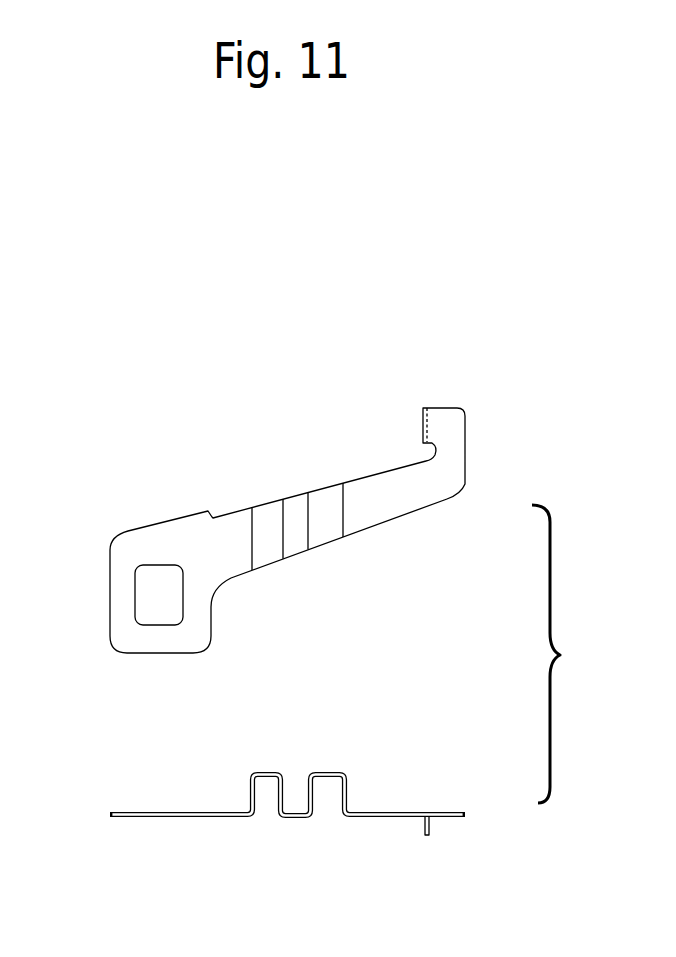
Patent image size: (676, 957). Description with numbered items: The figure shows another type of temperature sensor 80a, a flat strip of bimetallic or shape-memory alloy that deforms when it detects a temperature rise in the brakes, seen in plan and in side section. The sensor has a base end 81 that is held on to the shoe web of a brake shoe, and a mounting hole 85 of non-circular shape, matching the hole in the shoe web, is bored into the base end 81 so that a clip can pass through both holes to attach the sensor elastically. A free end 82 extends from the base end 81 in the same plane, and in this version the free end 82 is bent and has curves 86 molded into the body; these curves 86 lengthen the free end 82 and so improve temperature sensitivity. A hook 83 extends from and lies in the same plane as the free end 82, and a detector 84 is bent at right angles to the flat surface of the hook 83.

The spring member 80a is at (187, 510).
The base end 81 is at (192, 632).
The free end 82 is at (397, 512).
The hook 83 is at (438, 418).
The detector 84 is at (423, 429).
The mounting hole 85 is at (147, 592).
The curves 86 is at (268, 515).